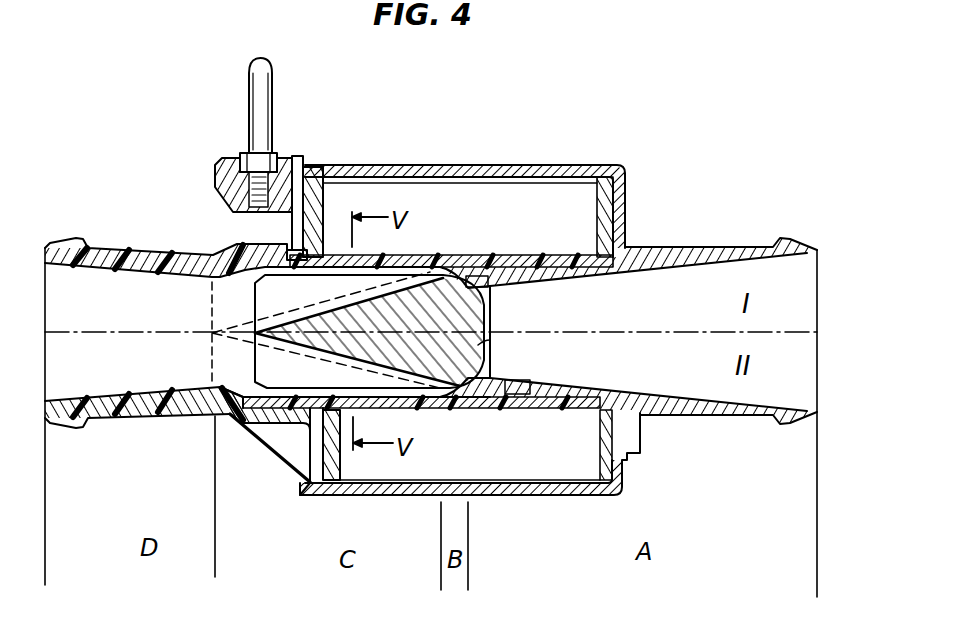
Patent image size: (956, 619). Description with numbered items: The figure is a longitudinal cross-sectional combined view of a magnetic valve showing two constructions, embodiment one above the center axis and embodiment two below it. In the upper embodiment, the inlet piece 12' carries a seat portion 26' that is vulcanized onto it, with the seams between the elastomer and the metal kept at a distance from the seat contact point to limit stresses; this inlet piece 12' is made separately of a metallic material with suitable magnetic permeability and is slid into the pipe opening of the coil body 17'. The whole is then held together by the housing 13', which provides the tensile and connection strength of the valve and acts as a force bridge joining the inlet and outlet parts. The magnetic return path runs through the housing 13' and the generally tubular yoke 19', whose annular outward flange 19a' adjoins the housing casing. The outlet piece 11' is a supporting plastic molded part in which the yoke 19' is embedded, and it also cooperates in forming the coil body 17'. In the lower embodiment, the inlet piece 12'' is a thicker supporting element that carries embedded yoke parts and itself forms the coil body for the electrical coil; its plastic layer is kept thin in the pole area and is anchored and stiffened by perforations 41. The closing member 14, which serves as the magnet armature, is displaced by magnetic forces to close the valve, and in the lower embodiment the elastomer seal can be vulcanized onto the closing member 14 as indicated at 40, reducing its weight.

The outlet piece 11' is at (267, 350).
The inlet piece 12' is at (628, 277).
The inlet piece 12'' is at (628, 429).
The housing 13' is at (470, 312).
The closing member 14 is at (312, 336).
The coil body 17' is at (428, 307).
The yoke 19' is at (451, 308).
The annular outward flange 19a' is at (279, 159).
The seat portion 26' is at (511, 253).
The elastomer seal 40 is at (478, 347).
The perforations 41 is at (621, 387).